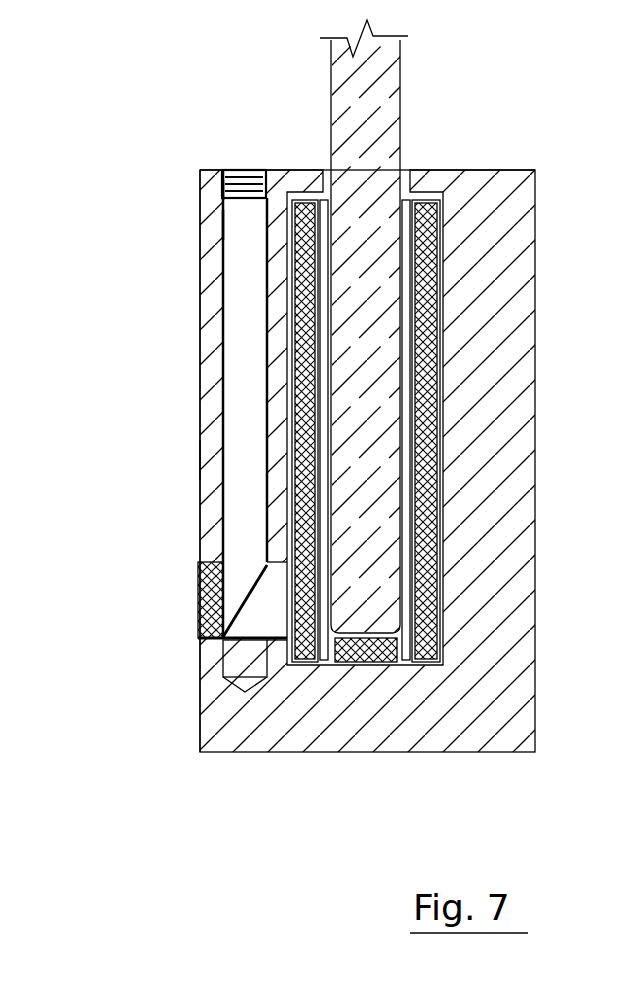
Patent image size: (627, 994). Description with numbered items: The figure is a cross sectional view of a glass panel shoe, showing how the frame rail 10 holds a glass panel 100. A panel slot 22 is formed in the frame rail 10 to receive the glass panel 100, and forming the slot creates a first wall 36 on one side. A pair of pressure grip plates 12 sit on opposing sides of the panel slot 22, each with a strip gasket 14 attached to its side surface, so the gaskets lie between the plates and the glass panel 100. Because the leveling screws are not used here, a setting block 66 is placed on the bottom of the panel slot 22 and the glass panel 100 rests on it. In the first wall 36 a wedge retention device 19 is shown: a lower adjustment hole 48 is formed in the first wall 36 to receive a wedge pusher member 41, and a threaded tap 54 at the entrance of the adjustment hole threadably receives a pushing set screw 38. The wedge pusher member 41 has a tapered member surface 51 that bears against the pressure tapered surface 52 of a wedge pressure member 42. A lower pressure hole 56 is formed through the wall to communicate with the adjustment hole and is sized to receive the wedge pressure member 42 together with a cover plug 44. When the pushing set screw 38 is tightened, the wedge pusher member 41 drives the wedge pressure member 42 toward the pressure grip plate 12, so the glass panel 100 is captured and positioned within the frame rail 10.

The frame rail 10 is at (535, 677).
The pressure grip plate 12 is at (303, 207).
The strip gasket 14 is at (325, 398).
The wedge retention device 19 is at (190, 458).
The panel slot 22 is at (405, 667).
The first wall 36 is at (198, 375).
The pushing set screw 38 is at (252, 170).
The wedge pusher member 41 is at (238, 323).
The wedge pressure member 42 is at (258, 623).
The cover plug 44 is at (245, 622).
The lower adjustment hole 48 is at (223, 228).
The tapered member surface 51 is at (255, 580).
The pressure tapered surface 52 is at (225, 612).
The threaded tap 54 is at (223, 190).
The lower pressure hole 56 is at (275, 642).
The setting block 66 is at (367, 662).
The glass panel 100 is at (400, 95).